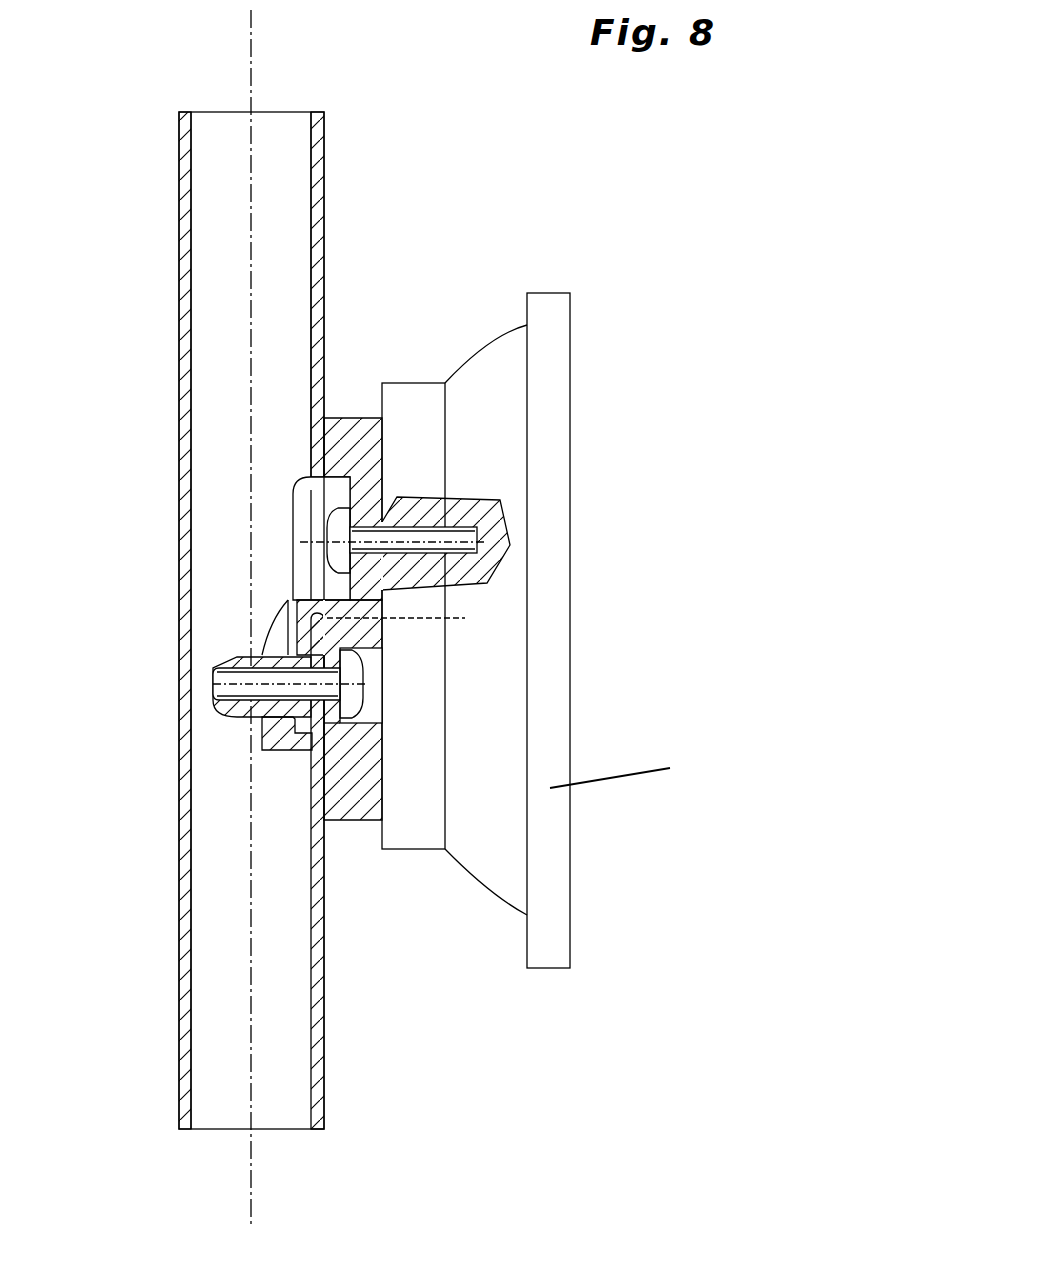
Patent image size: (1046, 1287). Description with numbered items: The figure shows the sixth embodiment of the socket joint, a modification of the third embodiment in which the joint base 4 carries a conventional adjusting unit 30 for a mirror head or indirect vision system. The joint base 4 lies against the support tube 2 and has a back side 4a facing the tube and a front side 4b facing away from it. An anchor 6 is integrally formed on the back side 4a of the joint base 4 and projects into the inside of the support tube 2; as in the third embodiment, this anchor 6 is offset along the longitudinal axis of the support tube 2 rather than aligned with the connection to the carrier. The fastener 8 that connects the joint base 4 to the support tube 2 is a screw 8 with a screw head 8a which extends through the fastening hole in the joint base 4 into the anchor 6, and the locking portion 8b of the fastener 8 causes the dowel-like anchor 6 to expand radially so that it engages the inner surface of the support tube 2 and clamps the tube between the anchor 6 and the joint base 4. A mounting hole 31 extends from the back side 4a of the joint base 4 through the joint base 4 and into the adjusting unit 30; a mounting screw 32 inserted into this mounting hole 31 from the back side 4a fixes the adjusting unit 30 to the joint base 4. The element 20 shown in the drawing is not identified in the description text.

The support tube 2 is at (180, 215).
The joint base 4 is at (370, 800).
The back side 4a is at (322, 430).
The front side 4b is at (382, 793).
The anchor 6 is at (230, 668).
The fastener 8 is at (238, 683).
The screw head 8a is at (363, 676).
The locking portion 8b is at (213, 685).
The clamping element 20 is at (300, 756).
The adjusting unit 30 is at (505, 395).
The mounting hole 31 is at (365, 517).
The mounting screw 32 is at (470, 533).